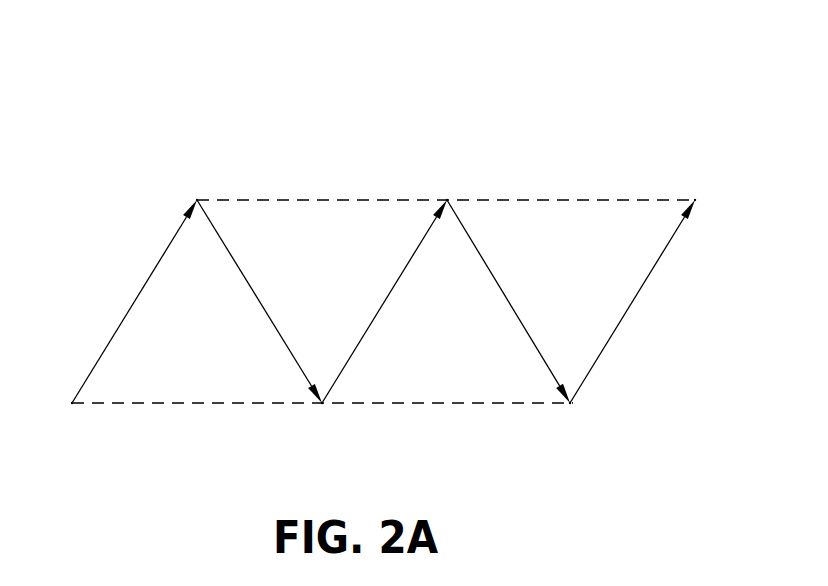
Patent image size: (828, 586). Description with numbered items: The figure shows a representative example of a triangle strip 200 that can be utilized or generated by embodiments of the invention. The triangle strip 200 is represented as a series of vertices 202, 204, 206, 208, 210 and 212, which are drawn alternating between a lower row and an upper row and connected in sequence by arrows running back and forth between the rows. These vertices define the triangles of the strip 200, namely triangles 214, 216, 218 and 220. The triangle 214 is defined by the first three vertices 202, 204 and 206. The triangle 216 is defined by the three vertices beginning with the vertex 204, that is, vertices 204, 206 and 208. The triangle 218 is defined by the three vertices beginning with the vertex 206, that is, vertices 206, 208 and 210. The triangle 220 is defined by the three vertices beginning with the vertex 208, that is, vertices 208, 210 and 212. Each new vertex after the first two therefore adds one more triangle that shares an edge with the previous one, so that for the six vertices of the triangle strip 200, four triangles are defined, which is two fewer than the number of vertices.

The triangle strip 200 is at (571, 83).
The vertex 202 is at (72, 405).
The vertex 204 is at (197, 198).
The vertex 206 is at (322, 405).
The vertex 208 is at (447, 198).
The vertex 210 is at (570, 405).
The vertex 212 is at (695, 198).
The triangle 214 is at (218, 348).
The triangle 216 is at (342, 267).
The triangle 218 is at (463, 348).
The triangle 220 is at (585, 267).